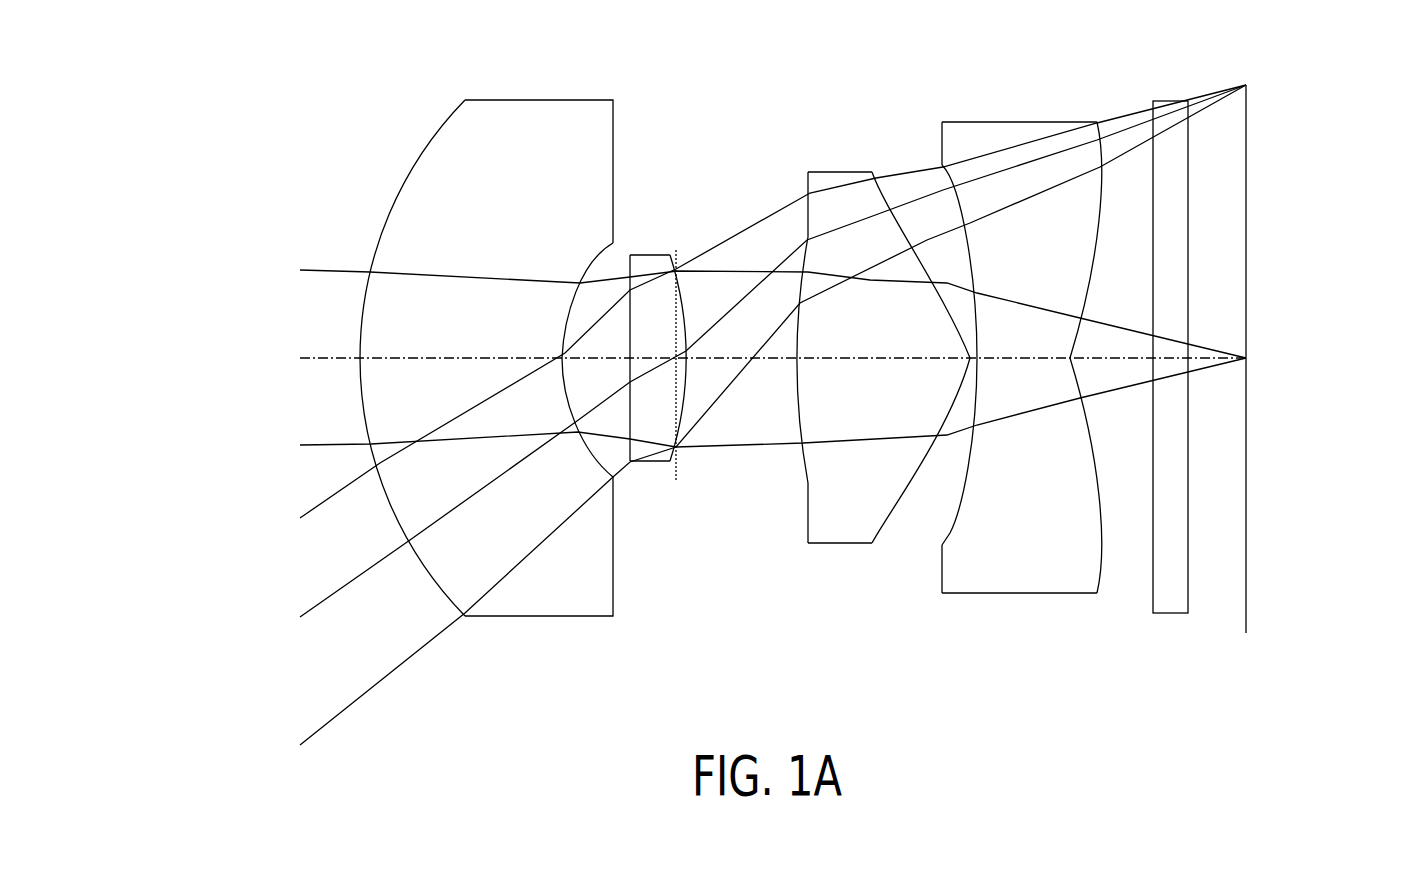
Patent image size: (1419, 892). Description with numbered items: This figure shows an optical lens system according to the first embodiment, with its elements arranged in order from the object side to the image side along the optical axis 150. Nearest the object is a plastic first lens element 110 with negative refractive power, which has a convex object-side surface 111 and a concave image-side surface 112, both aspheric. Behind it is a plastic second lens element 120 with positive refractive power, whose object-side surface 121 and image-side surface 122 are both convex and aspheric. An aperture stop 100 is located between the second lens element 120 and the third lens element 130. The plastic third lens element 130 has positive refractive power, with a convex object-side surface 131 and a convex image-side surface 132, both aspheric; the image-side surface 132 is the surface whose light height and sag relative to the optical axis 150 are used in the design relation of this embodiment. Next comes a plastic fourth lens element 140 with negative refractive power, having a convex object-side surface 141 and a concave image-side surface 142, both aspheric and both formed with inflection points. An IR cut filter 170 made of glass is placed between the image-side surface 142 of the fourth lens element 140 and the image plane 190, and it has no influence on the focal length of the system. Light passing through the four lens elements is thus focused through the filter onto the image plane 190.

The aperture stop 100 is at (679, 247).
The first lens element 110 is at (477, 348).
The object-side surface of the first lens element 111 is at (408, 158).
The image-side surface of the first lens element 112 is at (592, 462).
The second lens element 120 is at (674, 363).
The object-side surface of the second lens element 121 is at (626, 409).
The image-side surface of the second lens element 122 is at (686, 402).
The third lens element 130 is at (865, 355).
The object-side surface of the third lens element 131 is at (805, 489).
The image-side surface of the third lens element 132 is at (899, 516).
The fourth lens element 140 is at (1057, 355).
The object-side surface of the fourth lens element 141 is at (951, 536).
The image-side surface of the fourth lens element 142 is at (1103, 564).
The optical axis 150 is at (338, 357).
The IR cut filter 170 is at (1159, 98).
The image plane 190 is at (1247, 173).